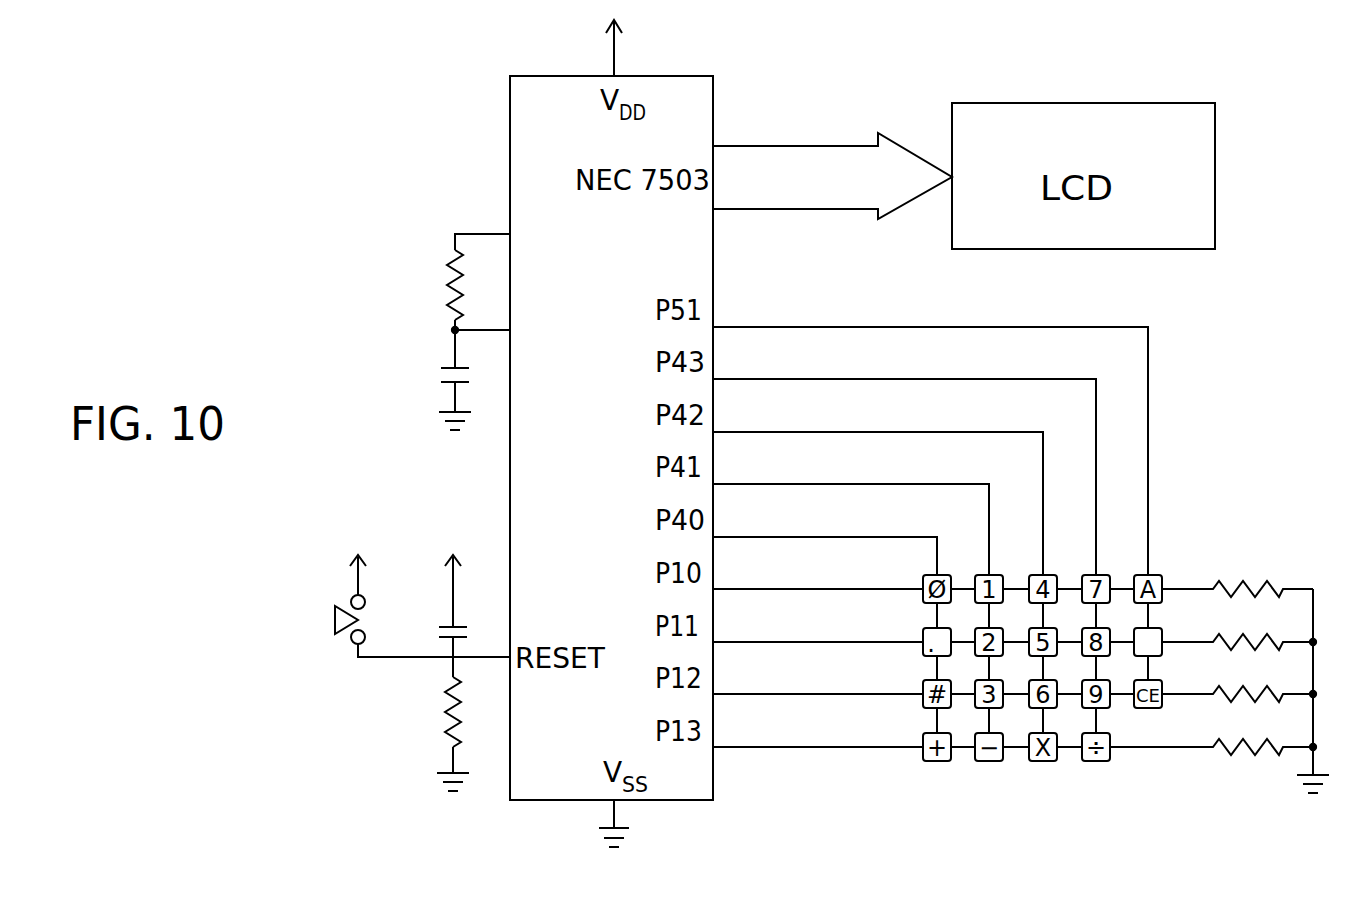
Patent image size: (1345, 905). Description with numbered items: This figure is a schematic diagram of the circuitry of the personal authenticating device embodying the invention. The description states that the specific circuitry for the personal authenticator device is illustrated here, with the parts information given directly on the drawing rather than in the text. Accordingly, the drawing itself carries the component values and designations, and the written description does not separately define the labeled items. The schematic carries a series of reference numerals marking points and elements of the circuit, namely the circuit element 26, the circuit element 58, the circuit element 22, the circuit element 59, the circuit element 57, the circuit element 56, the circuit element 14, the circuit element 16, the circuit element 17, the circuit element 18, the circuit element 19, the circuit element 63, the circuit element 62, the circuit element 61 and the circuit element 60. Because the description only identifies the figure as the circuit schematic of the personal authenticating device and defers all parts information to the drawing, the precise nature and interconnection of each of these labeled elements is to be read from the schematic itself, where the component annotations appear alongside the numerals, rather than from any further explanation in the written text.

The power supply 26 is at (623, 41).
The supply voltage line 58 is at (660, 49).
The ground 22 is at (628, 820).
The oscillator resistor terminal 59 is at (426, 260).
The oscillator capacitor terminal 57 is at (432, 363).
The reset input 56 is at (394, 657).
The keypad column line P51 14 is at (930, 493).
The keypad column line P43 16 is at (904, 545).
The keypad column line P42 17 is at (878, 572).
The keypad column line P41 18 is at (851, 598).
The keypad column line P40 19 is at (825, 624).
The keypad row line P10 63 is at (1013, 573).
The keypad row line P11 62 is at (1013, 626).
The keypad row line P12 61 is at (1013, 678).
The keypad row line P13 60 is at (1013, 731).